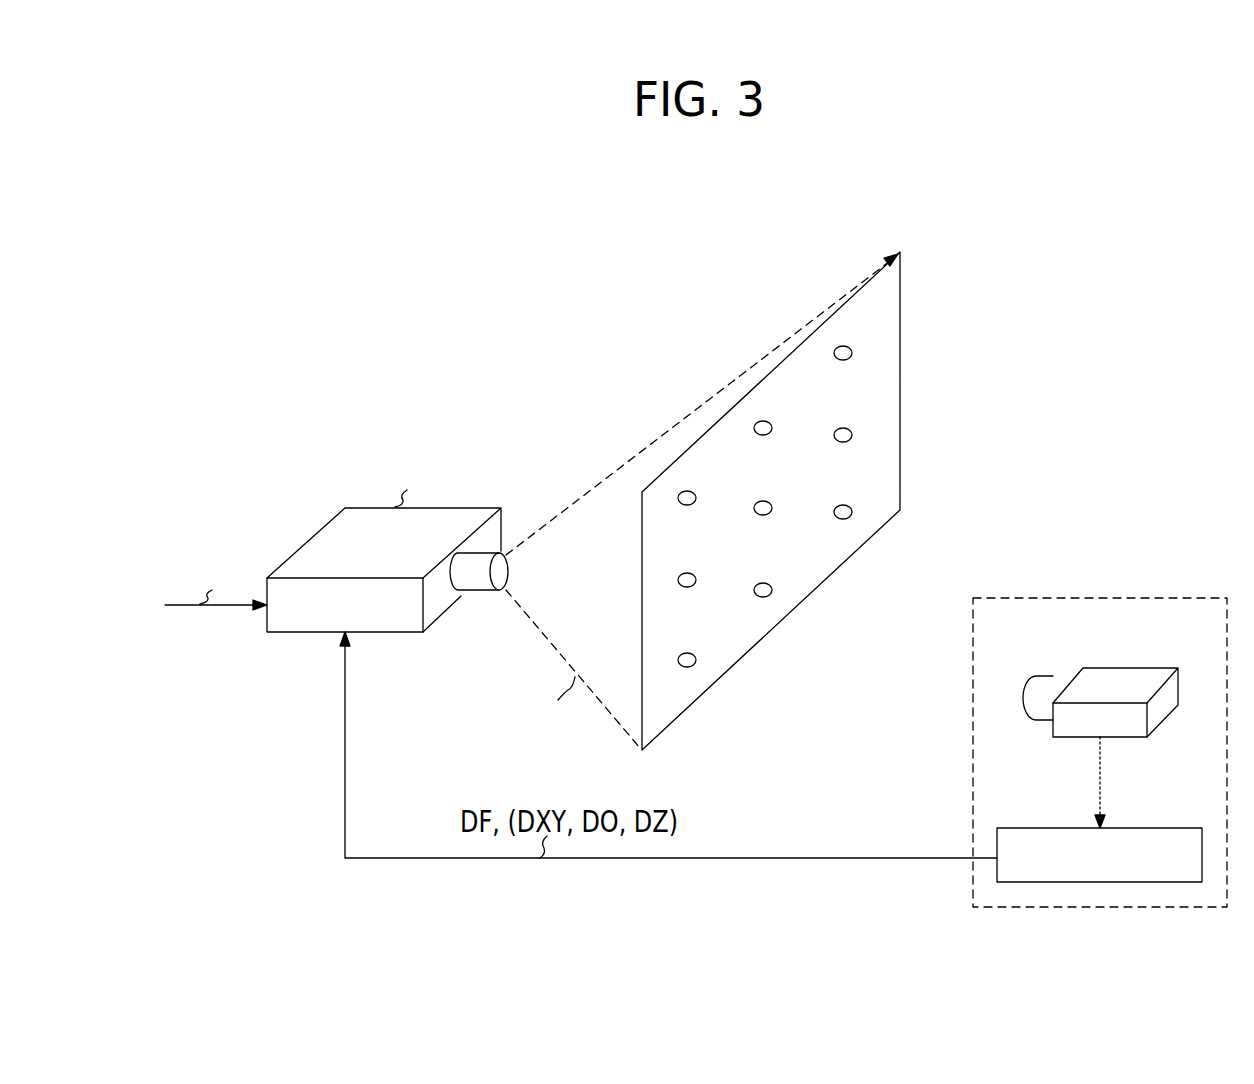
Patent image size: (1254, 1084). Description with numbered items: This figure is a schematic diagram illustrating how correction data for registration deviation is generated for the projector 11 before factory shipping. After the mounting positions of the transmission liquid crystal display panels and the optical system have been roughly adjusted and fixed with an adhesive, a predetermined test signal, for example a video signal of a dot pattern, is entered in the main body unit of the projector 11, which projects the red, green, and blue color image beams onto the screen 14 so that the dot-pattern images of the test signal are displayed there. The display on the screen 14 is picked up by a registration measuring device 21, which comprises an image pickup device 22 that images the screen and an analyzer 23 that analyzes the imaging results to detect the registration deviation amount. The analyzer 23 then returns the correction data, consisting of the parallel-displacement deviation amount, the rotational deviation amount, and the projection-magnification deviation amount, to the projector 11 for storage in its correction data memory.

The projector 11 is at (265, 242).
The screen 14 is at (900, 343).
The registration measuring device 21 is at (1114, 598).
The image pickup device 22 is at (1126, 668).
The analyzer 23 is at (1124, 828).